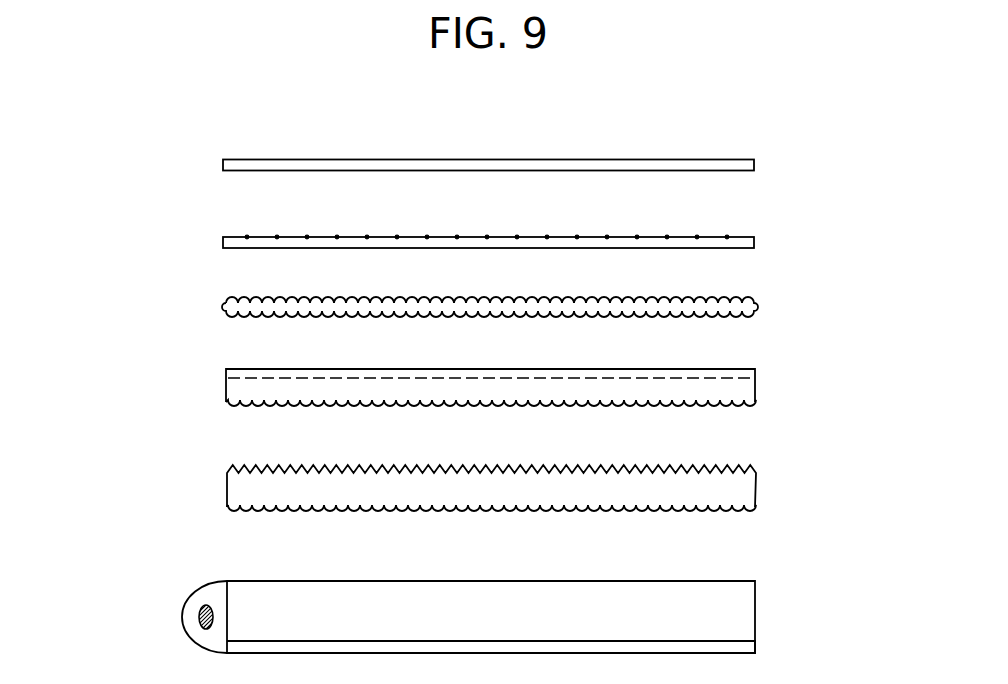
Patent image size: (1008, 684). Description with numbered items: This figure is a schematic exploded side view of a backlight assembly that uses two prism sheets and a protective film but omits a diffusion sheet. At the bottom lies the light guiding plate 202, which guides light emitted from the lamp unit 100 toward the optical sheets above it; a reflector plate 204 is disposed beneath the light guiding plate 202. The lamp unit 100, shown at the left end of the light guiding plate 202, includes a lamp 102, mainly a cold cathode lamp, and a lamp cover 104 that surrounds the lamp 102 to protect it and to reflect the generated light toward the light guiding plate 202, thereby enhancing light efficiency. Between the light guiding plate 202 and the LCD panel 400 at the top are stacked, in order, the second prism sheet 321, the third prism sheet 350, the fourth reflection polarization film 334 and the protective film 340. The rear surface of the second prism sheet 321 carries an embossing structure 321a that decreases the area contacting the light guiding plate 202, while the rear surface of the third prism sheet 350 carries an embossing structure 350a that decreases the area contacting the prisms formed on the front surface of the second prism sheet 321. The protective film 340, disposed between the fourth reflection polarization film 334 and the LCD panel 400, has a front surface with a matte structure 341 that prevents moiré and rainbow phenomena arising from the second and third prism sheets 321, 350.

The LCD panel 400 is at (754, 165).
The protective film 340 is at (754, 242).
The matte structure 341 is at (727, 237).
The fourth reflection polarization film 334 is at (754, 306).
The third prism sheet 350 is at (755, 378).
The embossing structure 350a is at (735, 405).
The second prism sheet 321 is at (755, 483).
The embossing structure 321a is at (735, 510).
The light guiding plate 202 is at (755, 602).
The reflector plate 204 is at (755, 647).
The lamp unit 100 is at (131, 615).
The lamp cover 104 is at (198, 592).
The lamp 102 is at (198, 617).